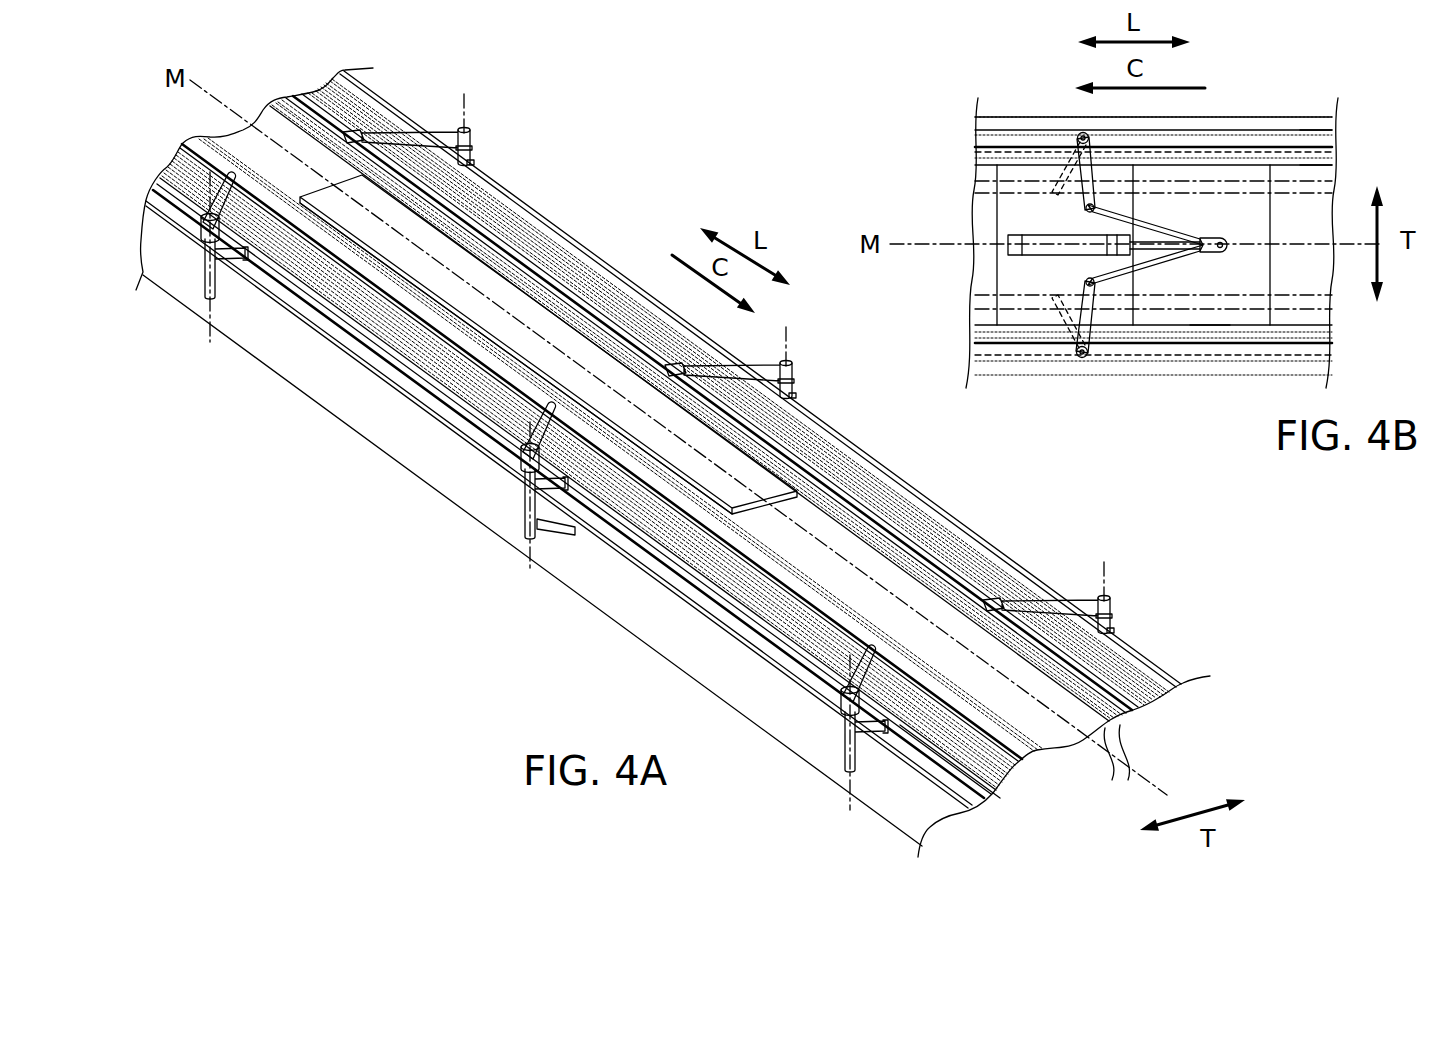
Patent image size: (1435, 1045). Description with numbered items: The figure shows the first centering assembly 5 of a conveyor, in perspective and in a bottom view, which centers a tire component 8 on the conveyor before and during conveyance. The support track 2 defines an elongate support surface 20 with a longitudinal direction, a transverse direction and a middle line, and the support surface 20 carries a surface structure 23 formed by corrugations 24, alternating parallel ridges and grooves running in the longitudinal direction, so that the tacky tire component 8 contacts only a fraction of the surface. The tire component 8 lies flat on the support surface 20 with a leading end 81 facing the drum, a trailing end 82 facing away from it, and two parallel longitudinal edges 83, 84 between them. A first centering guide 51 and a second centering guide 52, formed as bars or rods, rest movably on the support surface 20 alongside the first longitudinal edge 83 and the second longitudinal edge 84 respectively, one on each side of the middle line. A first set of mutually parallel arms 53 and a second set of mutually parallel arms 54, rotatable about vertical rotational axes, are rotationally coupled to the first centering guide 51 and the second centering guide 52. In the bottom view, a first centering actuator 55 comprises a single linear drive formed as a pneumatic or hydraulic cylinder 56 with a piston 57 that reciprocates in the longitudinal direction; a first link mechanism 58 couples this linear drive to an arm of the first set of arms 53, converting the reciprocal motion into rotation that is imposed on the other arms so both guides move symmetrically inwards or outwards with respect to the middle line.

In FIG. 4A, the support track 2 is at (283, 367).
In FIG. 4B, the support track 2 is at (1249, 120).
In FIG. 4A, the first centering assembly 5 is at (467, 217).
In FIG. 4A, the tire component 8 is at (522, 302).
In FIG. 4A, the support surface 20 is at (257, 125).
In FIG. 4A, the surface structure 23 is at (943, 598).
In FIG. 4A, the corrugations 24 is at (1122, 766).
In FIG. 4A, the first centering guide 51 is at (720, 535).
In FIG. 4B, the first centering guide 51 is at (1323, 190).
In FIG. 4A, the second centering guide 52 is at (808, 460).
In FIG. 4B, the second centering guide 52 is at (1218, 302).
In FIG. 4A, the first set of mutually parallel arms 53 is at (232, 180).
In FIG. 4B, the first set of mutually parallel arms 53 is at (1060, 172).
In FIG. 4A, the second set of mutually parallel arms 54 is at (443, 130).
In FIG. 4B, the second set of mutually parallel arms 54 is at (1058, 318).
In FIG. 4B, the first centering actuator 55 is at (1010, 235).
In FIG. 4B, the cylinder 56 is at (1062, 252).
In FIG. 4B, the piston 57 is at (1185, 240).
In FIG. 4B, the first link mechanism 58 is at (1170, 197).
In FIG. 4A, the leading end 81 is at (305, 190).
In FIG. 4A, the trailing end 82 is at (800, 530).
In FIG. 4A, the first longitudinal edge 83 is at (460, 320).
In FIG. 4A, the second longitudinal edge 84 is at (490, 258).